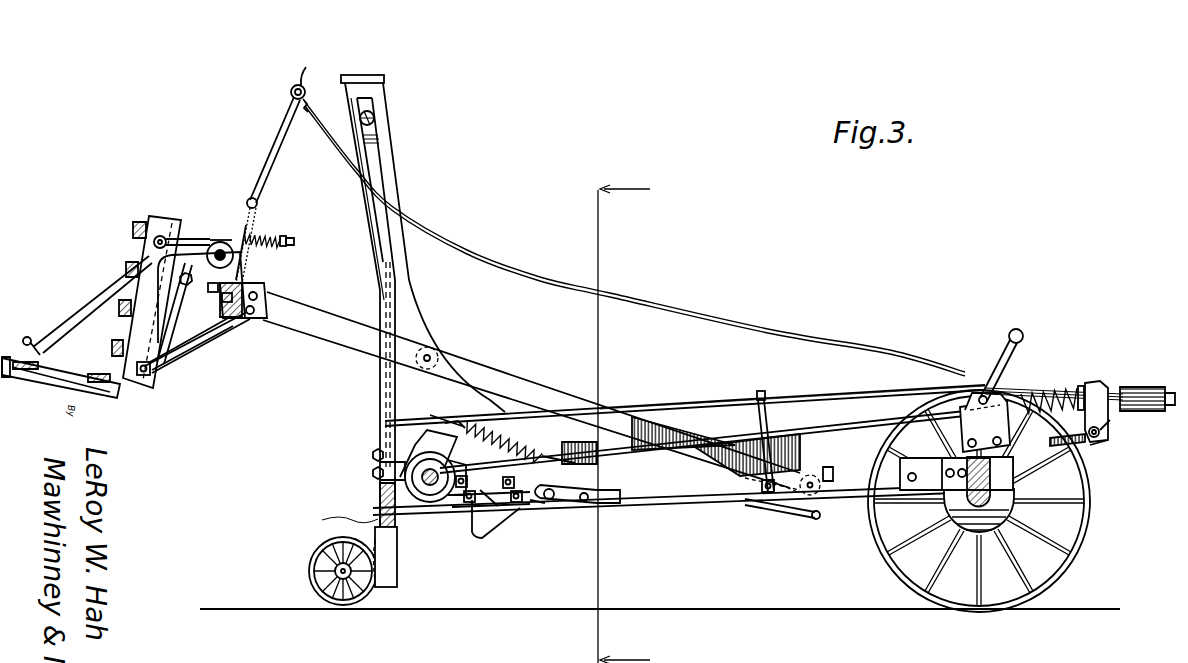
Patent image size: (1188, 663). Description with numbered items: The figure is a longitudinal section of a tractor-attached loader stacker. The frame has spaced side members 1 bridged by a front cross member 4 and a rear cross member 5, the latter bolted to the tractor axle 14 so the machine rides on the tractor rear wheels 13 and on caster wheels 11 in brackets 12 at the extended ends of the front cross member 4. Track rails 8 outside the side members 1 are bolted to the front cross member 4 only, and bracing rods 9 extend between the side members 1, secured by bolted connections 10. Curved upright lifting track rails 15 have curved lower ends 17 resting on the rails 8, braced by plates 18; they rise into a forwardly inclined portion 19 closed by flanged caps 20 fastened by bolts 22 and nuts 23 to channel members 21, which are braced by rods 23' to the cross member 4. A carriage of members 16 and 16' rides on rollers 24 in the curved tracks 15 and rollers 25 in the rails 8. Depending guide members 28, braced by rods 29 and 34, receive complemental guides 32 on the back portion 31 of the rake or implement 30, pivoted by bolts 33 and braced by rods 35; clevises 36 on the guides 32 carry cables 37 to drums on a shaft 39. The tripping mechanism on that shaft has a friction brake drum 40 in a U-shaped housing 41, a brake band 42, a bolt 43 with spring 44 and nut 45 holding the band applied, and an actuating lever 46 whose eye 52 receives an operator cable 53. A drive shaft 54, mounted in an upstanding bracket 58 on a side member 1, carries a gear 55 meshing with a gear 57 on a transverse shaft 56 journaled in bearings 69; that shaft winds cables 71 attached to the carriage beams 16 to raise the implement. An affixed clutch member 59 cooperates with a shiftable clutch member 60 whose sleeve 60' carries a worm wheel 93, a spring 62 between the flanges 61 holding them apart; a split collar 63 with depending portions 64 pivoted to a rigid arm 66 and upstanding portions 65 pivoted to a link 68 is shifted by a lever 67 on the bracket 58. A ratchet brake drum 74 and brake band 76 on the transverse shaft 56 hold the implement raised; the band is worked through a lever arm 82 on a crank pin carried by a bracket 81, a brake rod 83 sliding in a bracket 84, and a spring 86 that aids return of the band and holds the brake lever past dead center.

The side members 1 is at (713, 502).
The front cross member 4 is at (477, 413).
The rear cross member 5 is at (945, 512).
The track rails 8 is at (684, 516).
The bracing rods 9 is at (544, 503).
The bolted connections 10 is at (568, 505).
The caster wheels 11 is at (326, 607).
The supporting brackets 12 is at (372, 600).
The rear wheels 13 is at (920, 600).
The axle 14 is at (962, 525).
The curved upright lifting track rails 15 is at (400, 200).
The carriage member 16 is at (685, 391).
The carriage cross member 16' is at (201, 343).
The lower ends of tracks 17 is at (404, 270).
The plates 18 is at (566, 440).
The forwardly inclined portion 19 is at (362, 213).
The flanged caps 20 is at (380, 75).
The channel members 21 is at (384, 176).
The bolts 22 is at (372, 114).
The nuts 23 is at (403, 112).
The brace rods 23' is at (392, 394).
The rollers 24 is at (436, 344).
The rollers 25 is at (812, 472).
The guide members 28 is at (170, 357).
The brace rods 29 is at (200, 330).
The implement 30 is at (45, 380).
The back portion 31 is at (132, 234).
The complemental guides 32 is at (165, 218).
The bolts 33 is at (143, 375).
The brace rods 34 is at (478, 528).
The bracing rods 35 is at (85, 312).
The clevises 36 is at (170, 238).
The cables 37 is at (210, 240).
The rotatable shaft 39 is at (216, 244).
The friction brake drum 40 is at (243, 264).
The U-shaped housing 41 is at (242, 222).
The brake band 42 is at (250, 200).
The threaded bolt 43 is at (294, 244).
The spring 44 is at (278, 238).
The nut 45 is at (288, 242).
The actuating lever 46 is at (290, 140).
The eye 52 is at (303, 72).
The cable 53 is at (552, 280).
The drive shaft 54 is at (712, 444).
The gear 55 is at (458, 498).
The transverse shaft 56 is at (430, 490).
The gear 57 is at (436, 490).
The upstanding bracket 58 is at (968, 428).
The affixed clutch member 59 is at (1050, 388).
The shiftable clutch member 60 is at (1081, 363).
The sleeve portion 60' is at (1075, 371).
The flange 61 is at (1022, 468).
The spring 62 is at (1030, 462).
The split shiftable collar 63 is at (1110, 425).
The depending portions 64 is at (1108, 442).
The upstanding portions 65 is at (1098, 382).
The rigid arm 66 is at (1100, 450).
The lever 67 is at (1012, 332).
The link 68 is at (997, 375).
The bearings 69 is at (490, 510).
The cables 71 is at (774, 520).
The brake drum 74 is at (372, 455).
The brake band 76 is at (400, 446).
The bracket 81 is at (372, 472).
The lever arm 82 is at (448, 420).
The brake rod 83 is at (795, 398).
The bracket 84 is at (762, 390).
The spring 86 is at (510, 432).
The worm wheel 93 is at (1148, 388).